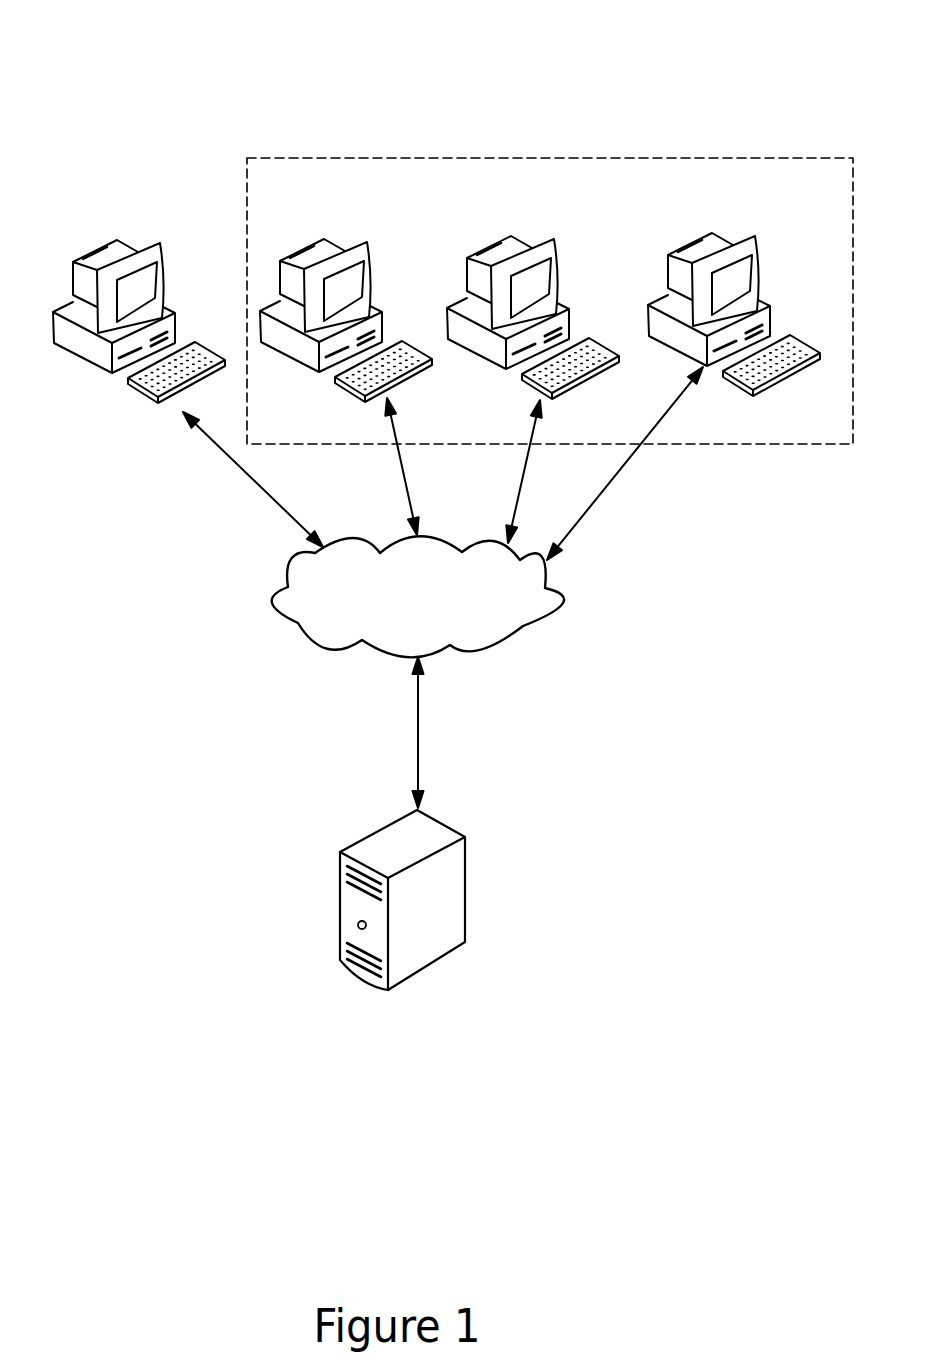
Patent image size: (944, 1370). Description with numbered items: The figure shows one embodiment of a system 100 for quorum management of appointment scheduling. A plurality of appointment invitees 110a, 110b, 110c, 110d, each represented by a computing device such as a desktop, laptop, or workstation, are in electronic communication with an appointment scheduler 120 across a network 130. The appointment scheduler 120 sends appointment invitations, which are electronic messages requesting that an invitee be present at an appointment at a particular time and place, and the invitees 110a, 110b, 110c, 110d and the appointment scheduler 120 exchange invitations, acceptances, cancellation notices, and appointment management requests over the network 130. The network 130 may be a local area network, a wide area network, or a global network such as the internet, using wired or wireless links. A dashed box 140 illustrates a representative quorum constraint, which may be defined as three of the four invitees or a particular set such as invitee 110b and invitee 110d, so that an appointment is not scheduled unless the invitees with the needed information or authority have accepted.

The system 100 is at (163, 72).
The appointment invitee 110a is at (139, 293).
The appointment invitee 110b is at (346, 292).
The appointment invitee 110c is at (533, 289).
The appointment invitee 110d is at (734, 286).
The appointment scheduler 120 is at (388, 826).
The network 130 is at (398, 621).
The quorum constraint 140 is at (655, 156).